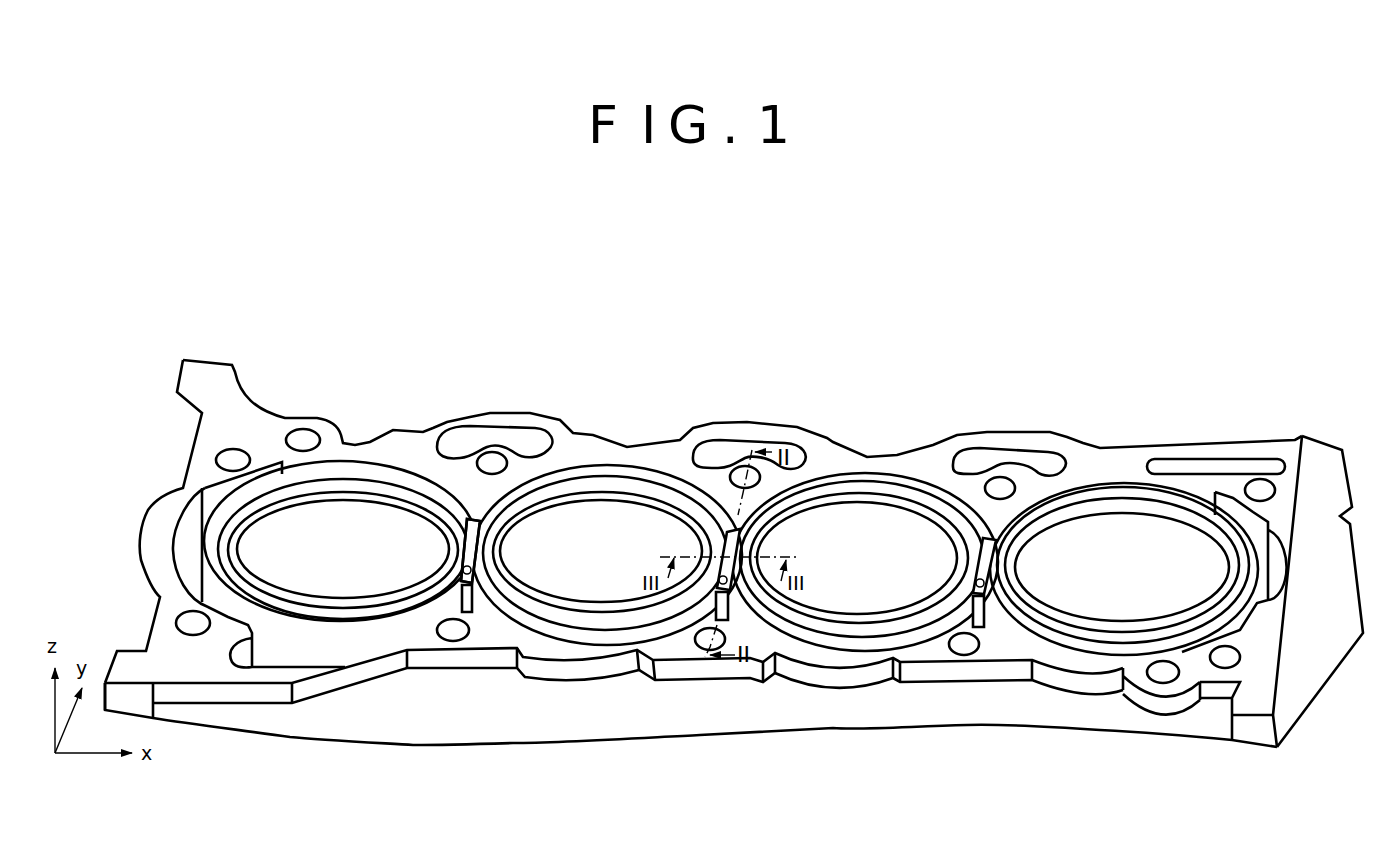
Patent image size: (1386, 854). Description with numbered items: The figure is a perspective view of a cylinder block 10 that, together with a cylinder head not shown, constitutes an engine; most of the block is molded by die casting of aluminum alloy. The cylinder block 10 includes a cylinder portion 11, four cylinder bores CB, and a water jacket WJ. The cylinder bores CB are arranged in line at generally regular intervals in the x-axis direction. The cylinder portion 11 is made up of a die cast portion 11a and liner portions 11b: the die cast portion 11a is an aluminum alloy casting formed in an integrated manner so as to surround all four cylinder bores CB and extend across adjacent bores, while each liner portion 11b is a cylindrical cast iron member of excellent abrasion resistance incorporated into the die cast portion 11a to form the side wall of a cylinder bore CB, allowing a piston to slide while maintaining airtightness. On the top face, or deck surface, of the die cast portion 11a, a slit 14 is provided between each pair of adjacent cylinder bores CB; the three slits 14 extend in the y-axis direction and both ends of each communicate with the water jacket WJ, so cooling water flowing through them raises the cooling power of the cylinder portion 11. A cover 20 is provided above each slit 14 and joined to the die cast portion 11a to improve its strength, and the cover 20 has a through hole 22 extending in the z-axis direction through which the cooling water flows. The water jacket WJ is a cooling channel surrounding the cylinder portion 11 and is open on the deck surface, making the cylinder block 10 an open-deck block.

The cylinder block 10 is at (1236, 340).
The cylinder portion 11 is at (865, 318).
The die cast portion 11a is at (860, 495).
The liner portion 11b is at (887, 508).
The slit 14 is at (484, 513).
The cover 20 is at (475, 557).
The through hole 22 is at (463, 567).
The cylinder bore CB is at (607, 534).
The water jacket WJ is at (672, 480).